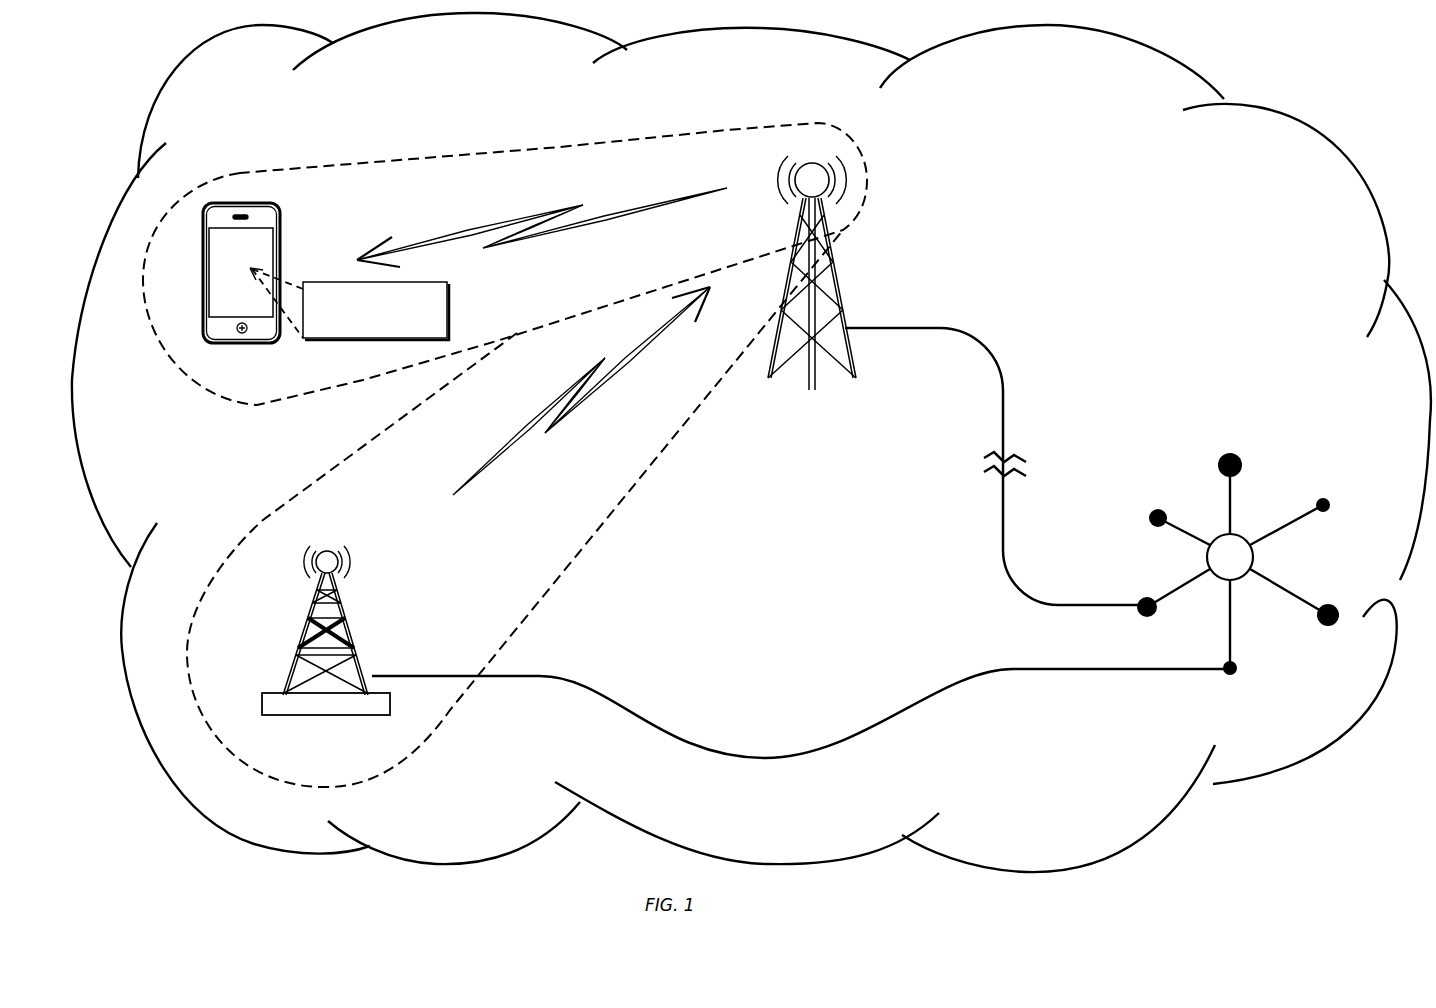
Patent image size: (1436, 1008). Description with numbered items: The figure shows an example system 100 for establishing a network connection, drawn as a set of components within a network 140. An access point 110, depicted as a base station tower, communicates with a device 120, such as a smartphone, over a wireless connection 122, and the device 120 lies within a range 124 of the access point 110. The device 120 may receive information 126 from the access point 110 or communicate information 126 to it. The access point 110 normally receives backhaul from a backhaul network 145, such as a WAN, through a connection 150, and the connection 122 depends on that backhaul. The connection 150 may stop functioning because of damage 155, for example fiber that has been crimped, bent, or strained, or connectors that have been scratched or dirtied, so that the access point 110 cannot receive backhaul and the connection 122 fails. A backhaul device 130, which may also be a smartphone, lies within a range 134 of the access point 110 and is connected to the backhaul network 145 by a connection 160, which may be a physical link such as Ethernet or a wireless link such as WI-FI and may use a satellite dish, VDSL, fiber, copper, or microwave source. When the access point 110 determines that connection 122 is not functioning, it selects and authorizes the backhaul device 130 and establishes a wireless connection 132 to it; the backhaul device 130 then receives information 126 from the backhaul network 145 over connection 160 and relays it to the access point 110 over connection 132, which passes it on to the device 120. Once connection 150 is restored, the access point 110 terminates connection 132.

The system 100 is at (1128, 208).
The access point 110 is at (843, 293).
The device 120 is at (283, 223).
The connection 122 is at (567, 228).
The range 124 is at (424, 158).
The information 126 is at (349, 304).
The backhaul device 130 is at (353, 633).
The connection 132 is at (563, 415).
The range 134 is at (574, 571).
The network 140 is at (751, 442).
The backhaul network 145 is at (1318, 455).
The connection 150 is at (1005, 383).
The damage 155 is at (1055, 464).
The connection 160 is at (680, 728).